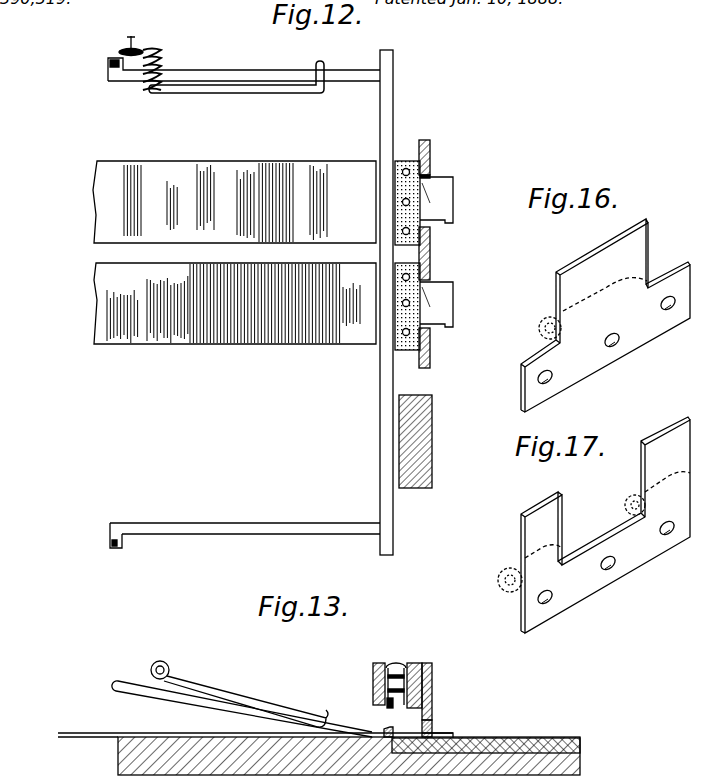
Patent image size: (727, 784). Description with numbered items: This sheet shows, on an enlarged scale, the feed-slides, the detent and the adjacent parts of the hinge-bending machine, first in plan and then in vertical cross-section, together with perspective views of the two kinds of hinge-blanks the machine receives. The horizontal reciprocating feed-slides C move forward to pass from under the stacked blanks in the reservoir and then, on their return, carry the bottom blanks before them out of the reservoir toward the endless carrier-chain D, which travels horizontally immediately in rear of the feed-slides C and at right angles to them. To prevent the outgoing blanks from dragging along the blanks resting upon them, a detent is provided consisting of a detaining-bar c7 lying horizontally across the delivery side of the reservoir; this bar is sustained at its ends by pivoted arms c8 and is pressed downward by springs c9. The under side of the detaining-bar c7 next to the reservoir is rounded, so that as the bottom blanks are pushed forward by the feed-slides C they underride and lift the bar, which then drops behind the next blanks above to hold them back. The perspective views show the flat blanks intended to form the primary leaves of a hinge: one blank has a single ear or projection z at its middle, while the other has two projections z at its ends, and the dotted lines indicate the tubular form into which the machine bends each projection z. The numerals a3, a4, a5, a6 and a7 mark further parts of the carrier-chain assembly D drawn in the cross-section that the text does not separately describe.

In FIG. 12, the feed-slides C is at (234, 252).
In FIG. 13, the feed-slides C is at (88, 734).
In FIG. 12, the detaining-bar c7 is at (382, 435).
In FIG. 13, the detaining-bar c7 is at (394, 731).
In FIG. 12, the pivoted arms c8 is at (233, 76).
In FIG. 13, the pivoted arms c8 is at (192, 697).
In FIG. 12, the springs c9 is at (262, 92).
In FIG. 13, the springs c9 is at (223, 690).
In FIG. 12, the endless carrier-chain D is at (435, 257).
In FIG. 13, the endless carrier-chain D is at (467, 693).
In FIG. 13, the clamping block a3 is at (374, 681).
In FIG. 13, the binding screw a4 is at (415, 662).
In FIG. 13, the washer a5 is at (389, 704).
In FIG. 12, the contact strip a6 is at (432, 153).
In FIG. 13, the contact strip a6 is at (433, 698).
In FIG. 12, the contact foot a7 is at (433, 178).
In FIG. 13, the contact foot a7 is at (433, 721).
In FIG. 12, the projections z is at (436, 252).
In FIG. 13, the projections z is at (444, 735).
In FIG. 16, the projections z is at (605, 315).
In FIG. 17, the projections z is at (594, 525).